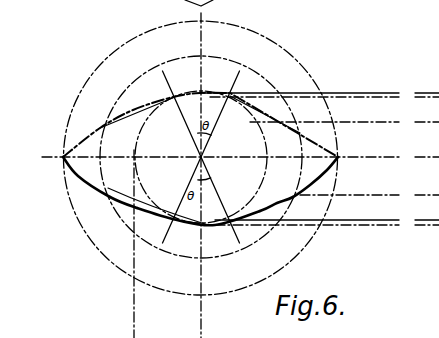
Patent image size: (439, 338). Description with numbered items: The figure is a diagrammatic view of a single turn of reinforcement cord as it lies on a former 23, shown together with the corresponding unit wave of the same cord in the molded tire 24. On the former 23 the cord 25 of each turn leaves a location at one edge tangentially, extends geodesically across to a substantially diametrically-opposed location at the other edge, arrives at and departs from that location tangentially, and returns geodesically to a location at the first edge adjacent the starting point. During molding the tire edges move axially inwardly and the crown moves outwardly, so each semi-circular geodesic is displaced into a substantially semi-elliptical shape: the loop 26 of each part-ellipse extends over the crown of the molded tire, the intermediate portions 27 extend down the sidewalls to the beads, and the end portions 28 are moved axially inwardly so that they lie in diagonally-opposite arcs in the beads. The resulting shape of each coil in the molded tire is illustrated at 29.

The former 23 is at (274, 81).
The molded tire 24 is at (322, 87).
The cord 25 is at (273, 209).
The loop 26 is at (77, 177).
The intermediate portions 27 is at (136, 211).
The end portions 28 is at (178, 224).
The coil 29 is at (287, 124).